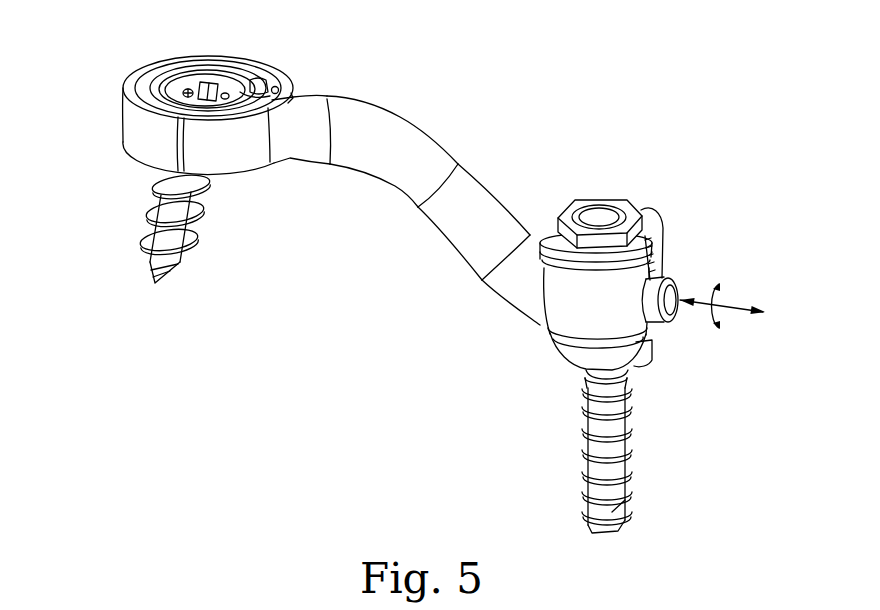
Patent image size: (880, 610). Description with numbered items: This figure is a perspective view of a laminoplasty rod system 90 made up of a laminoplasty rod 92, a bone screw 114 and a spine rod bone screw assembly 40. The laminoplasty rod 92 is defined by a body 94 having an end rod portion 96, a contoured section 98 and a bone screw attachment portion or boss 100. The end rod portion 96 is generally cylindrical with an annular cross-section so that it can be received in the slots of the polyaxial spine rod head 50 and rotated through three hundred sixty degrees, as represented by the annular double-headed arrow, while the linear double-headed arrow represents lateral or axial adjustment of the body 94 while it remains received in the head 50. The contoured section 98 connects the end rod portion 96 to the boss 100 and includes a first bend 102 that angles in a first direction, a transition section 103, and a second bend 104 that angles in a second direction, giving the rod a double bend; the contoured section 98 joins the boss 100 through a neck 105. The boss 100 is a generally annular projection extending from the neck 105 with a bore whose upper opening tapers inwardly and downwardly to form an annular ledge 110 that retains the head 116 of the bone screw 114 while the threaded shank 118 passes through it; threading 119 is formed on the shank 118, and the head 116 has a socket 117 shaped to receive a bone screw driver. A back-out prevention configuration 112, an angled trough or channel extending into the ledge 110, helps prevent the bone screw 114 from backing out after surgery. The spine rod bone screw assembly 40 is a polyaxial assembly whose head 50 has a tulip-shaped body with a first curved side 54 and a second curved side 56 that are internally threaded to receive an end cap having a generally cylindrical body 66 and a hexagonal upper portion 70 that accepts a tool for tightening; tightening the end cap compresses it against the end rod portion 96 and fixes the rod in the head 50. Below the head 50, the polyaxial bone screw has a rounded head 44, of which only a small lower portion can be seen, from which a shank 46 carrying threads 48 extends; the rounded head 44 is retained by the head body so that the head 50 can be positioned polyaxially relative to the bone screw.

The spine rod bone screw assembly 40 is at (642, 451).
The rounded head 44 is at (630, 372).
The shank 46 is at (598, 449).
The threads 48 is at (628, 450).
The polyaxial spine rod head 50 is at (623, 288).
The first curved side 54 is at (657, 212).
The second curved side 56 is at (570, 323).
The cylindrical body 66 is at (662, 234).
The hexagonal upper portion 70 is at (632, 205).
The laminoplasty rod system 90 is at (417, 277).
The laminoplasty rod 92 is at (189, 182).
The body 94 is at (476, 247).
The end rod portion 96 is at (670, 290).
The contoured section 98 is at (403, 197).
The bone screw attachment portion 100 is at (189, 98).
The first bend 102 is at (530, 293).
The transition section 103 is at (498, 200).
The second bend 104 is at (392, 121).
The neck portion 105 is at (312, 108).
The ledge 110 is at (238, 68).
The back-out prevention configuration 112 is at (280, 85).
The bone screw 114 is at (176, 248).
The head 116 is at (178, 74).
The socket 117 is at (206, 80).
The shank 118 is at (163, 232).
The screw thread 119 is at (207, 215).